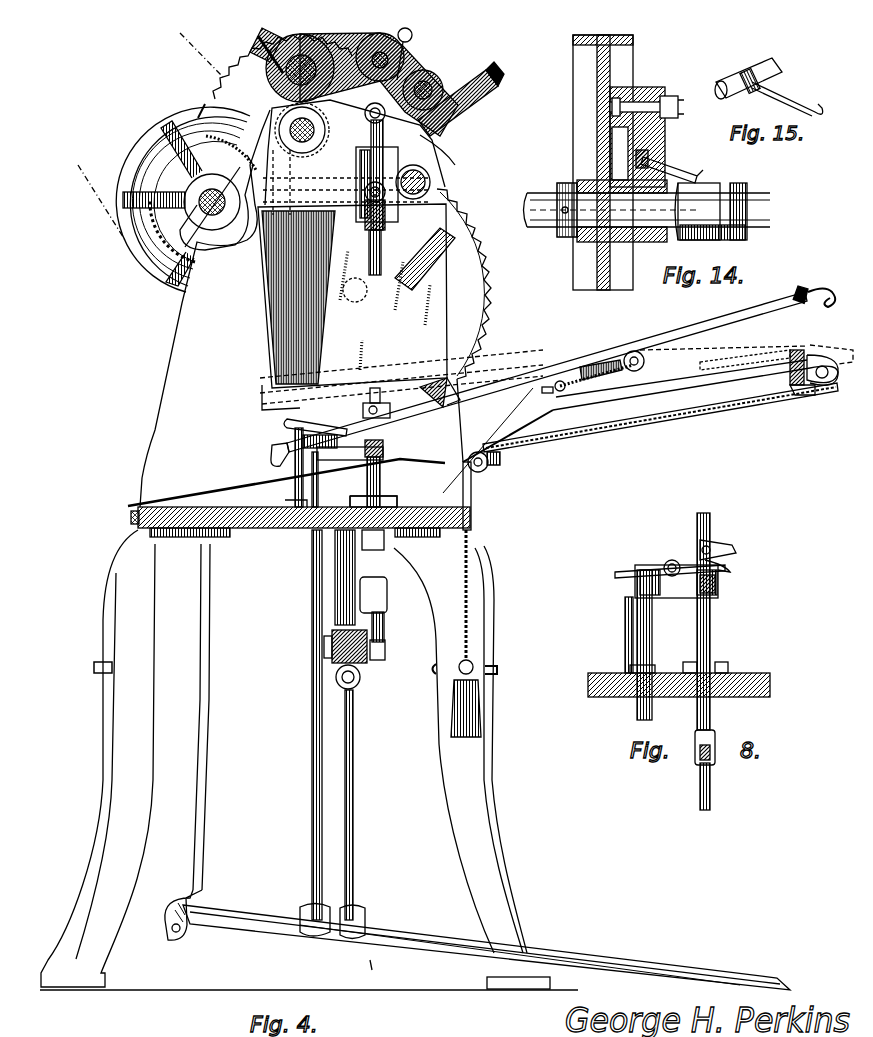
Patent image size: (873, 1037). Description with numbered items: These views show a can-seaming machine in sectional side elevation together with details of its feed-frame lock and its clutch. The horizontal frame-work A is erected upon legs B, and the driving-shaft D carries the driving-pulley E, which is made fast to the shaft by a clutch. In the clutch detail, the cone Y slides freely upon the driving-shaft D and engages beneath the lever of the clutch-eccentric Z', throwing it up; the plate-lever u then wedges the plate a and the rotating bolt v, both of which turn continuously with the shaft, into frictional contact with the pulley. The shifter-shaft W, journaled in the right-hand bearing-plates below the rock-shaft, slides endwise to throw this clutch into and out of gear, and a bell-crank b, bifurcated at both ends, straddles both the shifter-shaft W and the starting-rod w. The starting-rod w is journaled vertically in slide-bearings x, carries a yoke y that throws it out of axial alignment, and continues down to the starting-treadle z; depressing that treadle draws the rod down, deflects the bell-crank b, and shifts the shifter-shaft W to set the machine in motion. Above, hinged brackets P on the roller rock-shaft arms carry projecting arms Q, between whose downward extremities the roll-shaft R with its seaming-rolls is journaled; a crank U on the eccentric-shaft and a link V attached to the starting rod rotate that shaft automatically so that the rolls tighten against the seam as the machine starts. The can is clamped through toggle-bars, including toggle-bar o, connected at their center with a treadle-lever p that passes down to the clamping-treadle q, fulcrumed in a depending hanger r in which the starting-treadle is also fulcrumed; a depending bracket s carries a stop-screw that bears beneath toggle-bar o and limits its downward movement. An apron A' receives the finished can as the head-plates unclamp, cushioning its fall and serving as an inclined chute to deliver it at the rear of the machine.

In FIG. 4, the horizontal frame-work A is at (300, 524).
In FIG. 4, the apron A' is at (286, 482).
In FIG. 4, the legs B is at (295, 759).
In FIG. 4, the driving-pulley E is at (126, 172).
In FIG. 4, the shifter-shaft W is at (302, 130).
In FIG. 4, the crank U is at (365, 113).
In FIG. 4, the link V is at (370, 143).
In FIG. 4, the hinged bracket P is at (450, 82).
In FIG. 4, the projecting arm Q is at (437, 150).
In FIG. 4, the roll-shaft R is at (430, 182).
In FIG. 4, the bell-crank b is at (360, 226).
In FIG. 4, the toggle-bar o is at (354, 82).
In FIG. 4, the gear wheel K' is at (451, 284).
In FIG. 4, the treadle-lever p is at (352, 296).
In FIG. 4, the depending hanger r is at (187, 742).
In FIG. 4, the starting-rod w is at (312, 742).
In FIG. 4, the depending bracket s is at (362, 680).
In FIG. 4, the rotating bolt v is at (382, 552).
In FIG. 14, the rotating bolt v is at (672, 96).
In FIG. 4, the clamping-treadle q is at (733, 972).
In FIG. 4, the starting-treadle z is at (369, 973).
In FIG. 14, the starting-treadle z is at (702, 167).
In FIG. 15, the starting-treadle z is at (770, 87).
In FIG. 4, the clutch-eccentric z' is at (634, 360).
In FIG. 4, the yoke y is at (355, 458).
In FIG. 8, the yoke y is at (680, 592).
In FIG. 4, the slide-bearings x is at (397, 500).
In FIG. 14, the plate a is at (637, 137).
In FIG. 14, the plate-lever u is at (653, 150).
In FIG. 14, the driving-shaft D is at (647, 211).
In FIG. 14, the cone Y is at (711, 211).